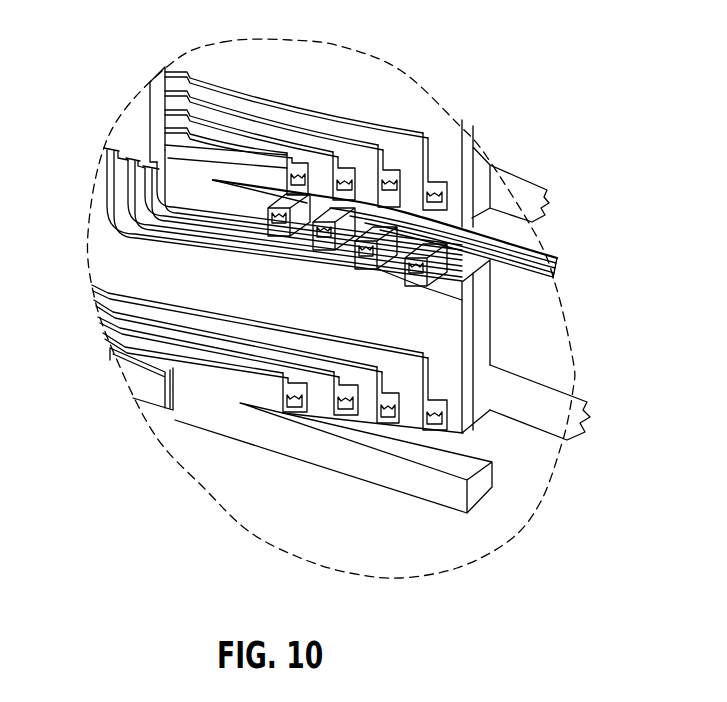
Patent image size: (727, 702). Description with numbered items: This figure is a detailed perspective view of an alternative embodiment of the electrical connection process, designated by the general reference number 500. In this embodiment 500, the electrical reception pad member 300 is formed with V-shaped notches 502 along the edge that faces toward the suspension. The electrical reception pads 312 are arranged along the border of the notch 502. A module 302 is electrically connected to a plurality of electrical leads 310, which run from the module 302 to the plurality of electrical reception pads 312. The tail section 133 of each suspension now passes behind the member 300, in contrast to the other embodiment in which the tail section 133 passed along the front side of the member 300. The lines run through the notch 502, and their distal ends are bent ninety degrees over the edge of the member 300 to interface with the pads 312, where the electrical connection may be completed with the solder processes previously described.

The electrical reception pad member 300 is at (330, 289).
The module 302 is at (113, 115).
The electrical leads 310 is at (284, 155).
The electrical reception pads 312 is at (365, 231).
The tail section 133 is at (431, 280).
The V shaped notches 502 is at (301, 404).
The alternative embodiment 500 is at (246, 435).